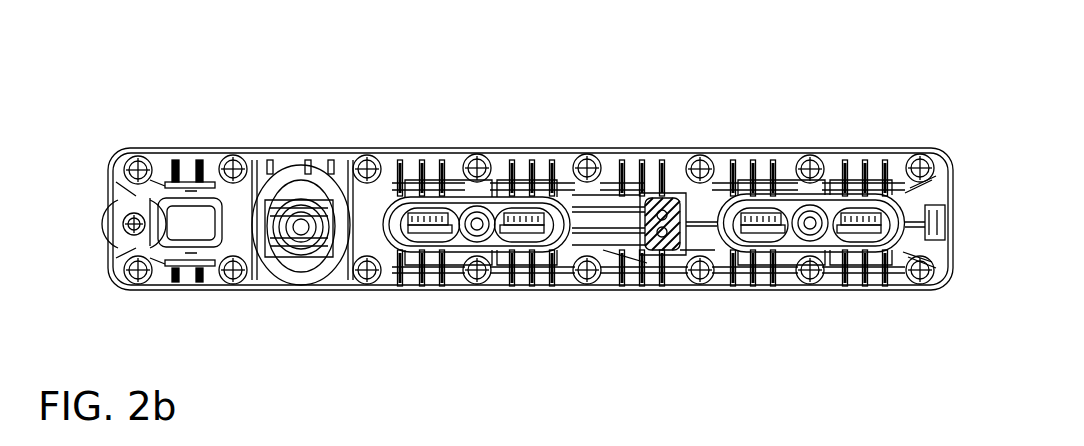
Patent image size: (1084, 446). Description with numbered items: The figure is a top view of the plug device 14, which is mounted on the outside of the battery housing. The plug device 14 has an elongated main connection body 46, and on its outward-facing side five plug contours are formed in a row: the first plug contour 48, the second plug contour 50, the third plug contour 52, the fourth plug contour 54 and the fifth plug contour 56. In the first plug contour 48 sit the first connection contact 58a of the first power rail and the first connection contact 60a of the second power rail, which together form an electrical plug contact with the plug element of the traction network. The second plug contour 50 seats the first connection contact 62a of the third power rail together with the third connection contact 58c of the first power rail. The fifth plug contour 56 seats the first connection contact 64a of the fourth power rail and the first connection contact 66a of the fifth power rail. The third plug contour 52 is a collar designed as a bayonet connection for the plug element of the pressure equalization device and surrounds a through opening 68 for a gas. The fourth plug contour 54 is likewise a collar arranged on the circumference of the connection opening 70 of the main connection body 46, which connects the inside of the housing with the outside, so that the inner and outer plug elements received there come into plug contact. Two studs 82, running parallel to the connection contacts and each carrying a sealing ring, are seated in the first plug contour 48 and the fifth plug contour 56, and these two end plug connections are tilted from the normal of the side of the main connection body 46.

The plug device 14 is at (883, 110).
The main connection body 46 is at (885, 285).
The first plug contour 48 is at (398, 253).
The second plug contour 50 is at (678, 252).
The third plug contour 52 is at (293, 266).
The fourth plug contour 54 is at (156, 237).
The fifth plug contour 56 is at (797, 254).
The first connection contact of the first power rail 58a is at (524, 218).
The third connection contact of the first power rail 58c is at (660, 250).
The first connection contact of the second power rail 60a is at (436, 218).
The first connection contact of the third power rail 62a is at (660, 198).
The first connection contact of the fourth power rail 64a is at (858, 218).
The first connection contact of the fifth power rail 66a is at (762, 216).
The through opening 68 is at (316, 197).
The connection opening 70 is at (192, 225).
The studs 82 is at (485, 264).